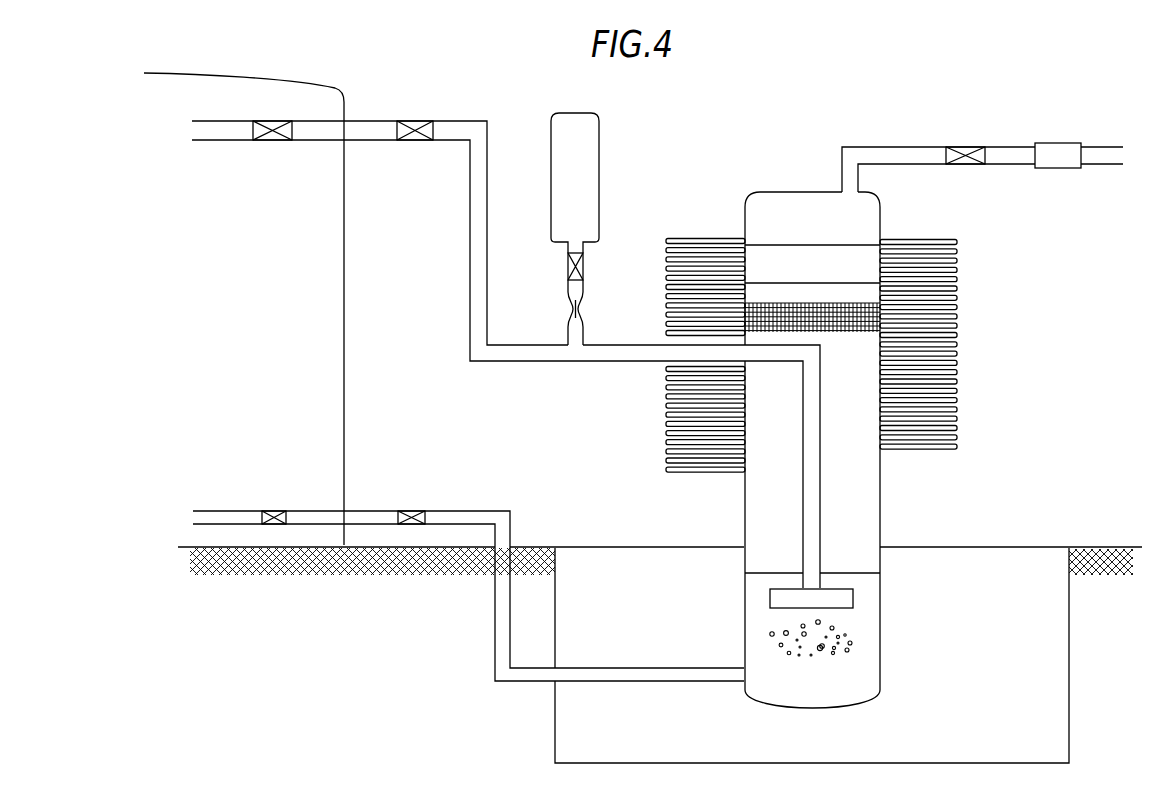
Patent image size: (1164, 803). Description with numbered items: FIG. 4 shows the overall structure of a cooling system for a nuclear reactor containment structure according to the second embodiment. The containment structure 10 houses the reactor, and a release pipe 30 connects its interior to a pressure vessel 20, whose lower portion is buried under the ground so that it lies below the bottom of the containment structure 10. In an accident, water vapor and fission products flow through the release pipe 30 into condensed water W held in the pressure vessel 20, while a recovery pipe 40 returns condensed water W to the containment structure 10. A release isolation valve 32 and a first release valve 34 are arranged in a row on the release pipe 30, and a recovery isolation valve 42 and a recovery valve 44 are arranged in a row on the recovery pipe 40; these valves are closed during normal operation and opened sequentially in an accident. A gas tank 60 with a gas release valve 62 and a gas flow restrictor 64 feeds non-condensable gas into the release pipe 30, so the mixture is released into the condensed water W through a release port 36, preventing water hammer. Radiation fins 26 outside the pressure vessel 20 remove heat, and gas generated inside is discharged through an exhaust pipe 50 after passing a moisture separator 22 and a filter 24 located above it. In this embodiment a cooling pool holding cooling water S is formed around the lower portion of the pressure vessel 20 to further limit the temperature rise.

The containment structure 10 is at (344, 192).
The pressure vessel 20 is at (881, 490).
The moisture separator 22 is at (905, 312).
The filter 24 is at (857, 256).
The radiation fins 26 is at (958, 385).
The release pipe 30 is at (470, 283).
The release isolation valve 32 is at (262, 141).
The first release valve 34 is at (404, 130).
The release port 36 is at (781, 597).
The recovery pipe 40 is at (495, 640).
The recovery isolation valve 42 is at (268, 510).
The recovery valve 44 is at (405, 510).
The exhaust pipe 50 is at (898, 146).
The gas tank 60 is at (600, 135).
The gas release valve 62 is at (584, 257).
The gas flow restrictor 64 is at (584, 307).
The condensed water W is at (881, 674).
The cooling water S is at (1055, 652).